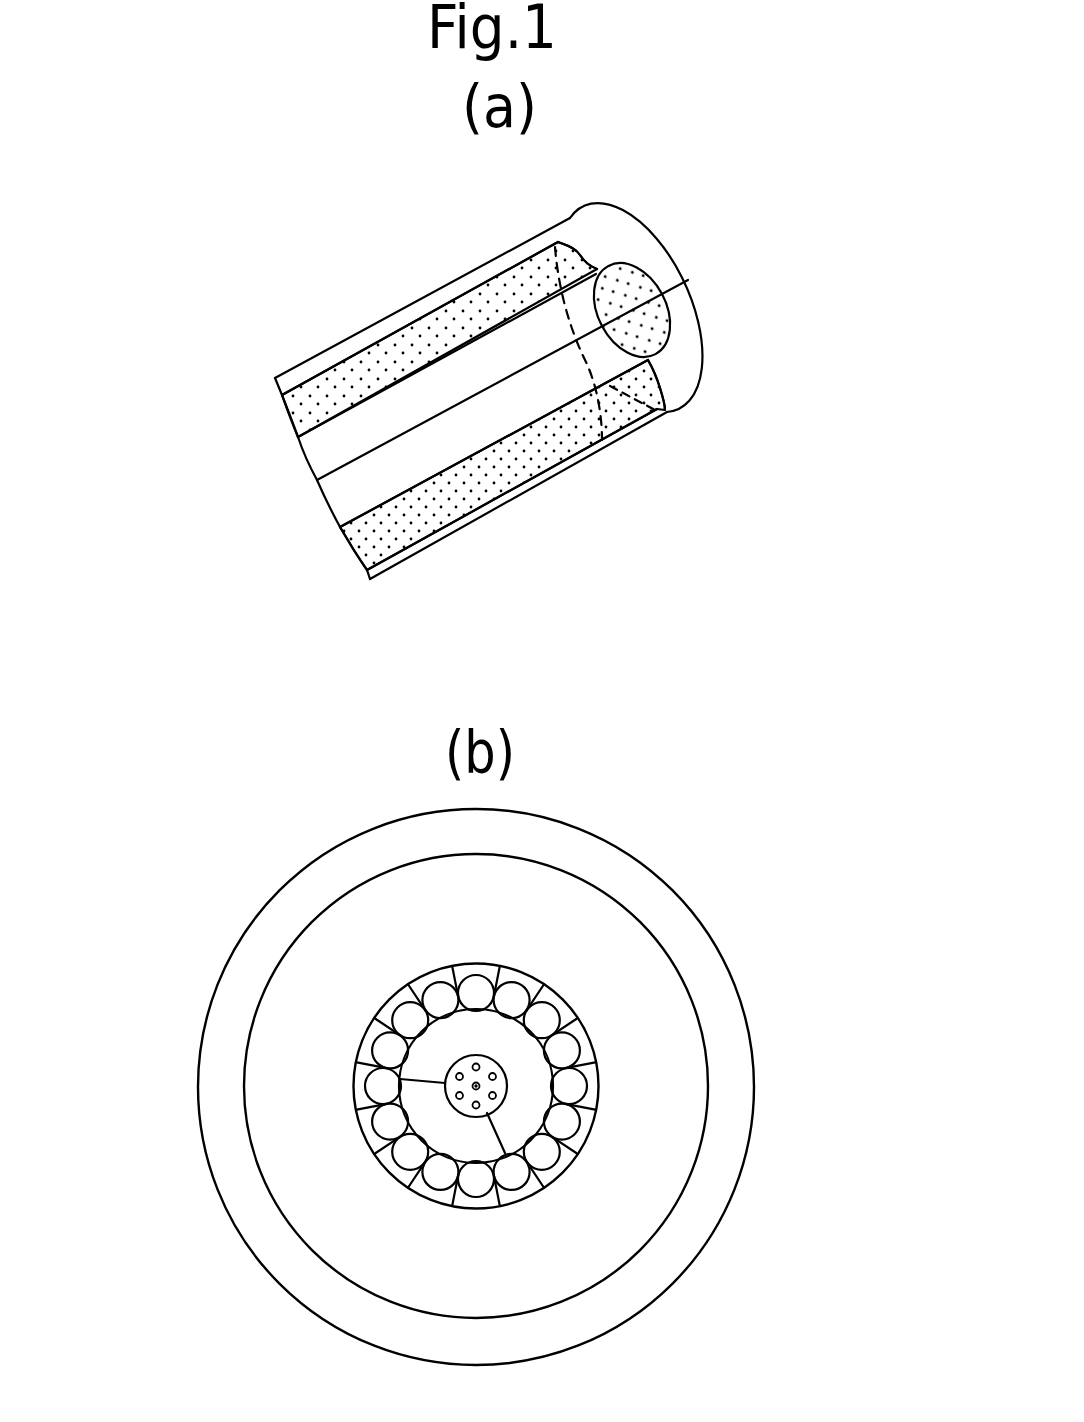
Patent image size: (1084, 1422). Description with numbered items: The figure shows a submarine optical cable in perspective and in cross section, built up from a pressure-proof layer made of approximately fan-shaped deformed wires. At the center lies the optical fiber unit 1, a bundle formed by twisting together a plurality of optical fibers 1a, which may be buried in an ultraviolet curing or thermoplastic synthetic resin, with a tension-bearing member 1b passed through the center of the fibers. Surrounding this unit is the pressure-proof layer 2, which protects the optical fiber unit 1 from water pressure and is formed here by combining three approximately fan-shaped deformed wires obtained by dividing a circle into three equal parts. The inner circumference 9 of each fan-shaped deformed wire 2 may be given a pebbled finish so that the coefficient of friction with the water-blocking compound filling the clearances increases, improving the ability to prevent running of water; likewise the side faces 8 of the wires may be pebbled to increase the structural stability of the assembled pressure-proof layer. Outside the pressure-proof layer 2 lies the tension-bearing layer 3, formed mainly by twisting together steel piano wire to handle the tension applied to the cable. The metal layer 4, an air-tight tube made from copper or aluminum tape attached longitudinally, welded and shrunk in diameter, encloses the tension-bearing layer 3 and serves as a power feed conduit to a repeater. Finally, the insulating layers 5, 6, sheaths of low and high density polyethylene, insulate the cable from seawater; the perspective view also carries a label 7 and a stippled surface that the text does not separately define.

The optical fiber unit 1 is at (502, 1079).
The optical fibers 1a is at (493, 1060).
The tension-bearing member 1b is at (475, 1083).
The pressure-proof layer 2 is at (595, 232).
The tension-bearing layer 3 is at (567, 1122).
The metal layer 4 is at (577, 1147).
The insulating layer 5 is at (627, 1197).
The insulating layer 6 is at (680, 1257).
The outer sheath 7 is at (427, 297).
The side faces 8 is at (297, 418).
The inner circumference 9 is at (643, 287).